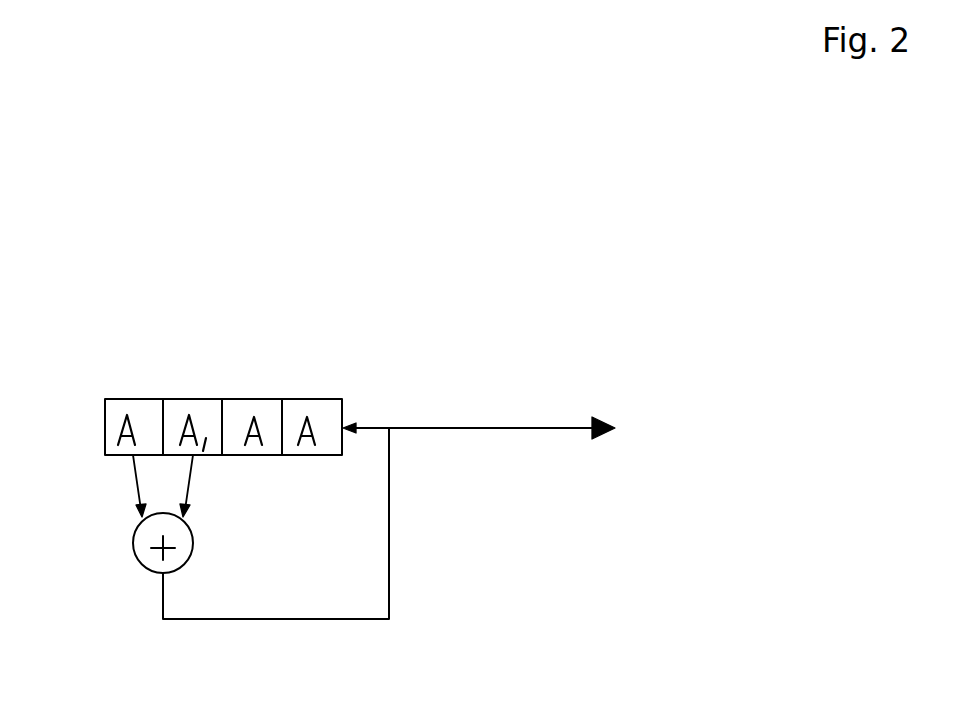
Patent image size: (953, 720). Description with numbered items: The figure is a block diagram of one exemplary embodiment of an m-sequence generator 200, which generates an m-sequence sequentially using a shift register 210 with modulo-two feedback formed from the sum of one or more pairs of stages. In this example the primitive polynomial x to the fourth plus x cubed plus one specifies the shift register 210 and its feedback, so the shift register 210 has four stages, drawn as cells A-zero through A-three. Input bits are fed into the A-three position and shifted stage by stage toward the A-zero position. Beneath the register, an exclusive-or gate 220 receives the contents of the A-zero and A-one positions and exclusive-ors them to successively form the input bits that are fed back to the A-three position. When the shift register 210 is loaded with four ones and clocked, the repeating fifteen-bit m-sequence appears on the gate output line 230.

The m-sequence generator 200 is at (570, 209).
The shift register 210 is at (195, 400).
The exclusive-or gate 220 is at (137, 563).
The gate output line 230 is at (608, 435).